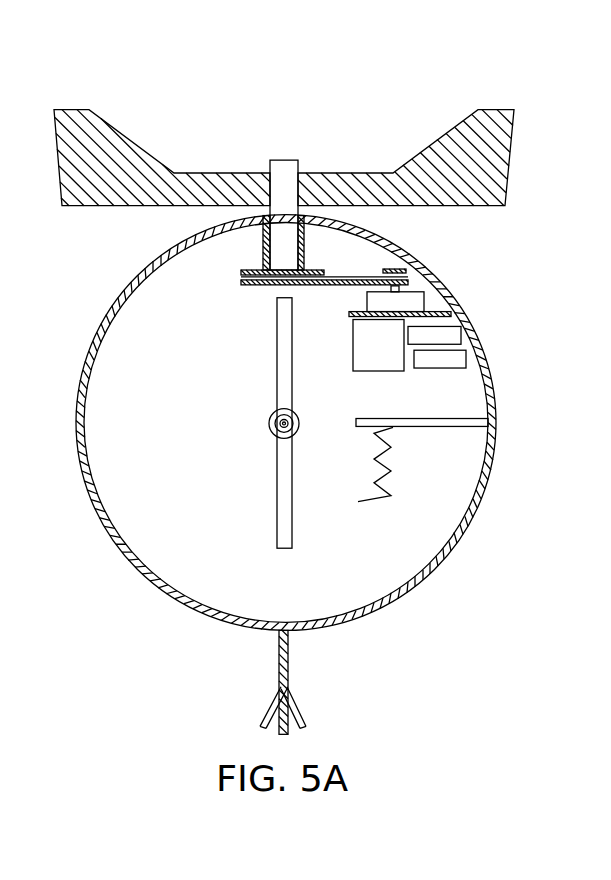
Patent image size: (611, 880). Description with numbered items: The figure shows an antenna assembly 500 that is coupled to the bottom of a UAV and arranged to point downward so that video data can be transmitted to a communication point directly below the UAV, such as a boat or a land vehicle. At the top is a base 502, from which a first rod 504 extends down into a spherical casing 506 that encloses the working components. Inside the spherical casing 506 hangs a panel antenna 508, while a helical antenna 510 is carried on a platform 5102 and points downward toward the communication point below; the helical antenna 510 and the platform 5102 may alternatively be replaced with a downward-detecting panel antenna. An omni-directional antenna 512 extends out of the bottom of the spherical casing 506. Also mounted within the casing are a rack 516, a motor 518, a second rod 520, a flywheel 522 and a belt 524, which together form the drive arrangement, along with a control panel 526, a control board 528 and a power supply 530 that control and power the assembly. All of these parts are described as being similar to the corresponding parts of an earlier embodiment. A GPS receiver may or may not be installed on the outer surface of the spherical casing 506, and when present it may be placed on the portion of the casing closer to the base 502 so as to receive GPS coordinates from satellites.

The antenna assembly 500 is at (512, 58).
The base 502 is at (498, 162).
The first rod 504 is at (283, 168).
The spherical casing 506 is at (403, 590).
The panel antenna 508 is at (282, 489).
The helical antenna 510 is at (393, 468).
The omni-directional antenna 512 is at (287, 657).
The rack 516 is at (430, 312).
The motor 518 is at (410, 297).
The second rod 520 is at (400, 265).
The flywheel 522 is at (246, 288).
The belt 524 is at (347, 272).
The control panel 526 is at (462, 334).
The control board 528 is at (465, 358).
The power supply 530 is at (387, 360).
The platform 5102 is at (489, 422).